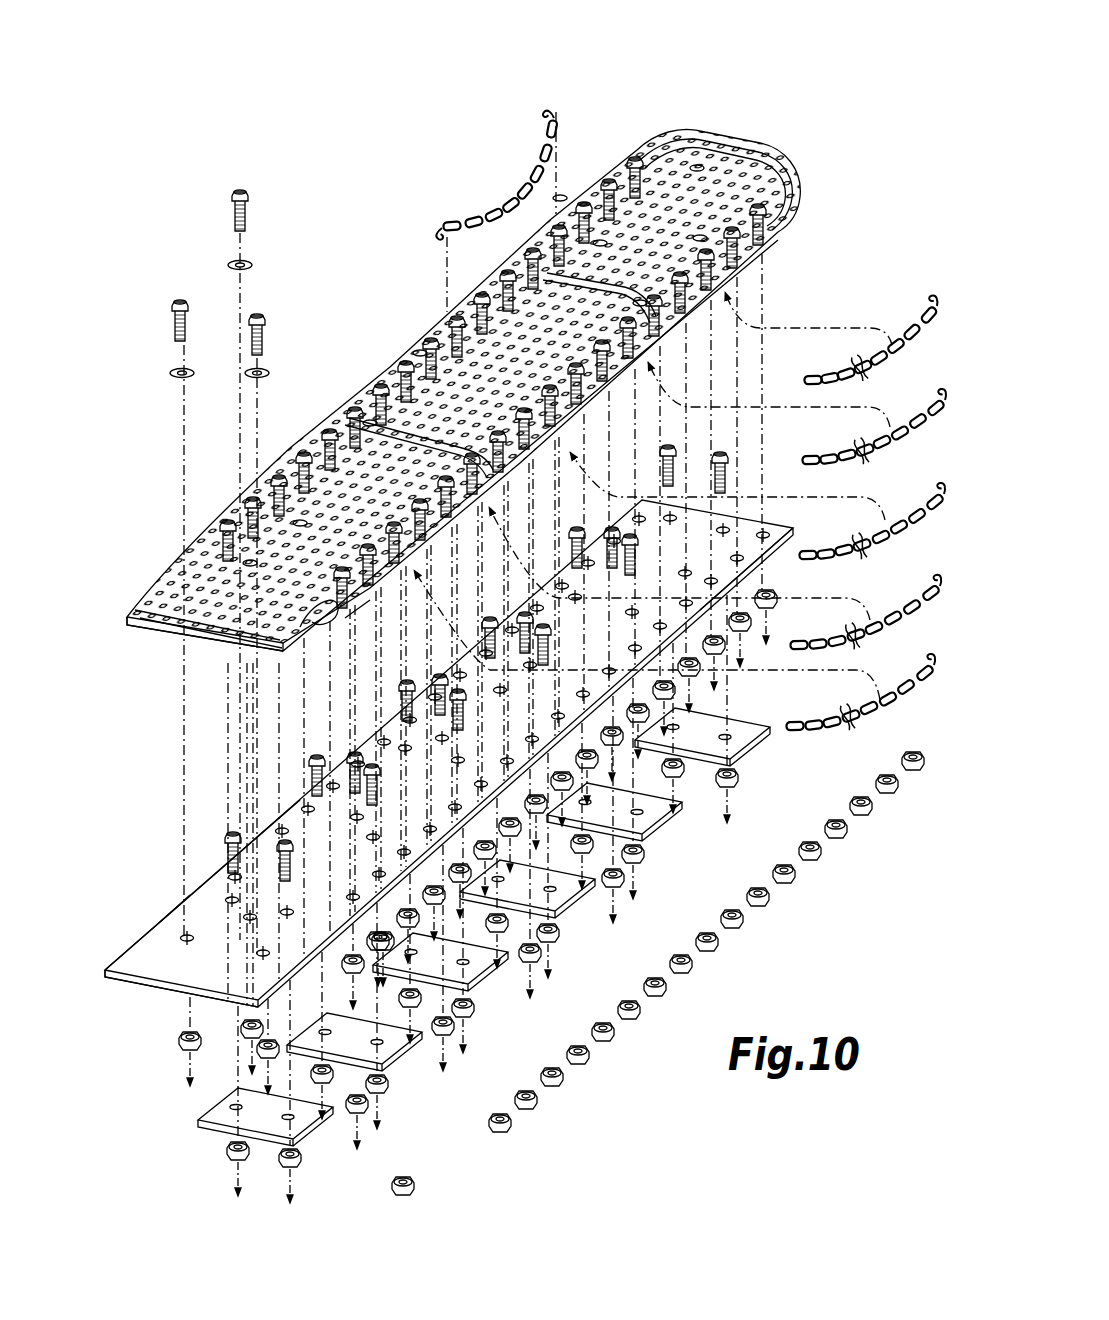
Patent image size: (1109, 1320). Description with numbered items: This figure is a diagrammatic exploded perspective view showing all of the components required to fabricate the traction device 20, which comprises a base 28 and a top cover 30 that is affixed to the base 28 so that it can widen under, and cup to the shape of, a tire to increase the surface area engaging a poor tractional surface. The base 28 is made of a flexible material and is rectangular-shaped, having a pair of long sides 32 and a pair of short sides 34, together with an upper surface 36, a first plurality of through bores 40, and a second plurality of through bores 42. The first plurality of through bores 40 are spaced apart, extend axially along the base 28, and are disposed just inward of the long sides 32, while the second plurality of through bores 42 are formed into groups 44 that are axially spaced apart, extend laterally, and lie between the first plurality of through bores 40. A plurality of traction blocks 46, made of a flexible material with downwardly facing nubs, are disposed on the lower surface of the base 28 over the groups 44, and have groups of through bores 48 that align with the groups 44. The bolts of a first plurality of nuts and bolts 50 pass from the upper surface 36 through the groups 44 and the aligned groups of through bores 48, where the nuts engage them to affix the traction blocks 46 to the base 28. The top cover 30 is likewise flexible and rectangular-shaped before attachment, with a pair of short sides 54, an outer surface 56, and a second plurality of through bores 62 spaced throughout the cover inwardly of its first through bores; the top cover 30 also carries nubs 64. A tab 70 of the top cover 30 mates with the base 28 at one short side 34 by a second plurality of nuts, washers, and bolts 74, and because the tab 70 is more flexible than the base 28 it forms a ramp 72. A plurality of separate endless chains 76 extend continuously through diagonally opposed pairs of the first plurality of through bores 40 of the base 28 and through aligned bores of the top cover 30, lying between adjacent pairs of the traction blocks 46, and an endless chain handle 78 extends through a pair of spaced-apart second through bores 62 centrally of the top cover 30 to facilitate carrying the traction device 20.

The traction device 20 is at (267, 142).
The base 28 is at (179, 895).
The top cover 30 is at (360, 382).
The pair of long sides 32 is at (164, 896).
The pair of short sides 34 is at (784, 521).
The upper surface 36 is at (170, 957).
The first plurality of through bores 40 is at (270, 813).
The second plurality of through bores 42 is at (345, 722).
The groups 44 is at (543, 683).
The plurality of traction blocks 46 is at (581, 905).
The groups of through bores 48 is at (377, 1040).
The first plurality of nuts and bolts 50 is at (280, 820).
The pair of short sides 54 is at (730, 136).
The outer surface 56 is at (437, 418).
The second plurality of through bores 62 is at (695, 163).
The nubs 64 is at (790, 163).
The tab 70 is at (163, 576).
The ramp 72 is at (205, 569).
The second plurality of nuts, washers, and bolts 74 is at (170, 328).
The plurality of endless chains 76 is at (918, 322).
The endless chain handle 78 is at (513, 174).